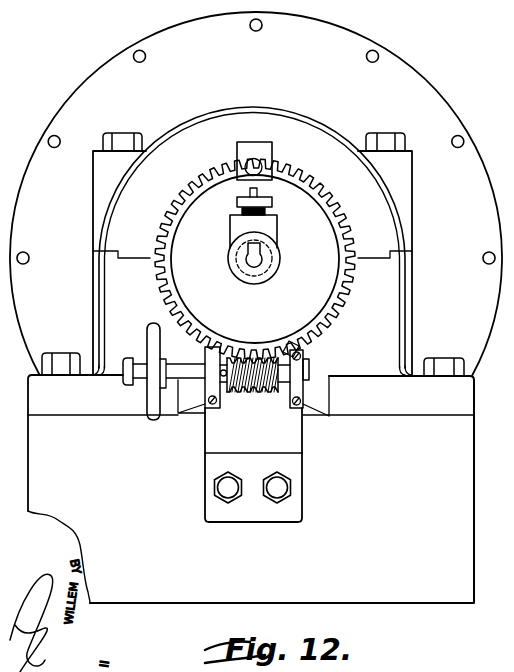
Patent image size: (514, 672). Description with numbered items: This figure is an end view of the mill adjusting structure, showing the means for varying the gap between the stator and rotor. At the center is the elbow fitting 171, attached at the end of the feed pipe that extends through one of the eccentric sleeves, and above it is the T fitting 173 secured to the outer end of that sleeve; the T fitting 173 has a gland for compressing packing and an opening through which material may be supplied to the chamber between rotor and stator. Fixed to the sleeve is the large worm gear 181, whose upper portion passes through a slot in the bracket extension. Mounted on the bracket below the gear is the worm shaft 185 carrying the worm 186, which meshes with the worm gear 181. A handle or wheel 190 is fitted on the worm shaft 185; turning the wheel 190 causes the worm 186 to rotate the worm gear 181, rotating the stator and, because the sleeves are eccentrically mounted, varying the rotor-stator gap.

The elbow fitting 171 is at (263, 258).
The T fitting 173 is at (272, 227).
The worm gear 181 is at (332, 196).
The worm shaft 185 is at (308, 369).
The worm 186 is at (245, 395).
The handle or wheel 190 is at (153, 420).